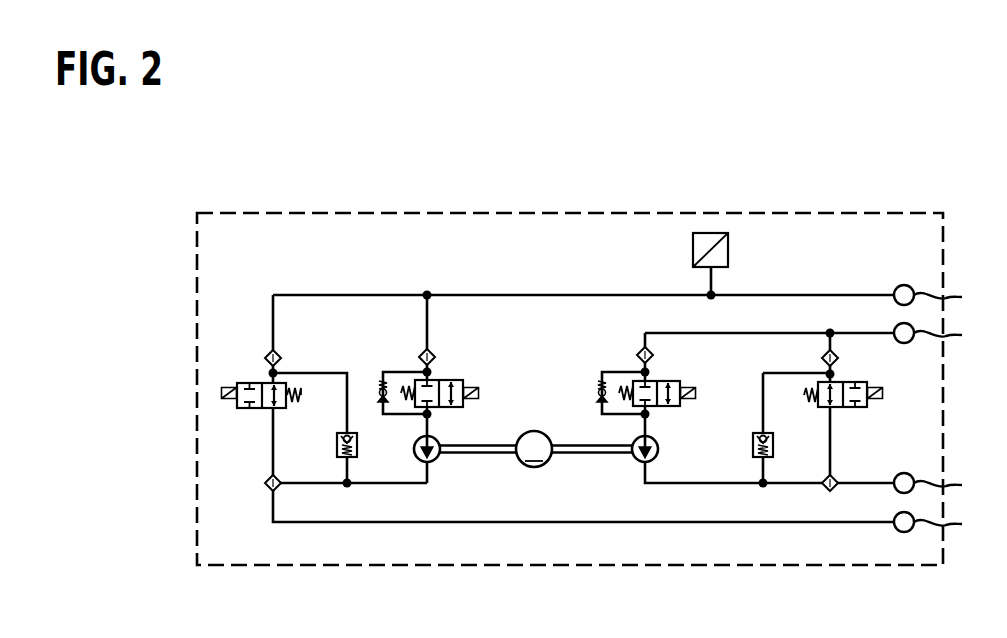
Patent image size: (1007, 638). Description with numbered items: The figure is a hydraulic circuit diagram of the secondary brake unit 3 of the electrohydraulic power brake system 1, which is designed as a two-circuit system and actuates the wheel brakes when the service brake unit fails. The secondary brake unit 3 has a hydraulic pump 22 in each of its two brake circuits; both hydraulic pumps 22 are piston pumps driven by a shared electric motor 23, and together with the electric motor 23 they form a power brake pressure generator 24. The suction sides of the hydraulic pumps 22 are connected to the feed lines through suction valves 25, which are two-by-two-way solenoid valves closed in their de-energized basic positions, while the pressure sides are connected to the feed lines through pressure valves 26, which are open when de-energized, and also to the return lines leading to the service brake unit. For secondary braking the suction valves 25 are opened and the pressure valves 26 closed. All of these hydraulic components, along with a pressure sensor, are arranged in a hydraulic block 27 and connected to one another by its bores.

The power brake system 1 is at (597, 316).
The secondary brake unit 3 is at (872, 152).
The hydraulic block 27 is at (482, 212).
The suction valves 25 is at (459, 383).
The pressure valves 26 is at (241, 408).
The hydraulic pumps 22 is at (539, 481).
The power brake pressure generator 24 is at (433, 460).
The electric motor 23 is at (535, 430).